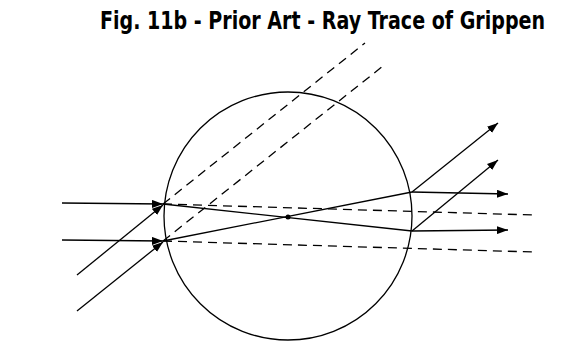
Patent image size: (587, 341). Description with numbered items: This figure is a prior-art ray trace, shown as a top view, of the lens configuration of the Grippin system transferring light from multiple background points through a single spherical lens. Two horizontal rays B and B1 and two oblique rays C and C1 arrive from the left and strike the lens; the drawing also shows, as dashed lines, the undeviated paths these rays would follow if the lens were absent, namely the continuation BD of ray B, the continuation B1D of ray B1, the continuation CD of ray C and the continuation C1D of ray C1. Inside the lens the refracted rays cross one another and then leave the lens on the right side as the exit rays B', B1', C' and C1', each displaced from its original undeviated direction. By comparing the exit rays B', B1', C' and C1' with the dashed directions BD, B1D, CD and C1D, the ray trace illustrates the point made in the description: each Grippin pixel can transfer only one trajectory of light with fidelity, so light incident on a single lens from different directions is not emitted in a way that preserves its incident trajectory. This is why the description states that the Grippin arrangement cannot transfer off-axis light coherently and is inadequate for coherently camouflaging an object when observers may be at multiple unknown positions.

The incident ray B is at (102, 204).
The incident ray B1 is at (100, 241).
The incident ray C is at (111, 248).
The incident ray C1 is at (113, 285).
The undeviated direction of ray C CD is at (329, 70).
The undeviated direction of ray C1 C1D is at (373, 76).
The undeviated direction of ray B BD is at (462, 215).
The undeviated direction of ray B1 B1D is at (418, 250).
The exit ray B1' is at (460, 185).
The exit ray C1' is at (455, 157).
The exit ray C' is at (455, 195).
The exit ray B' is at (460, 238).